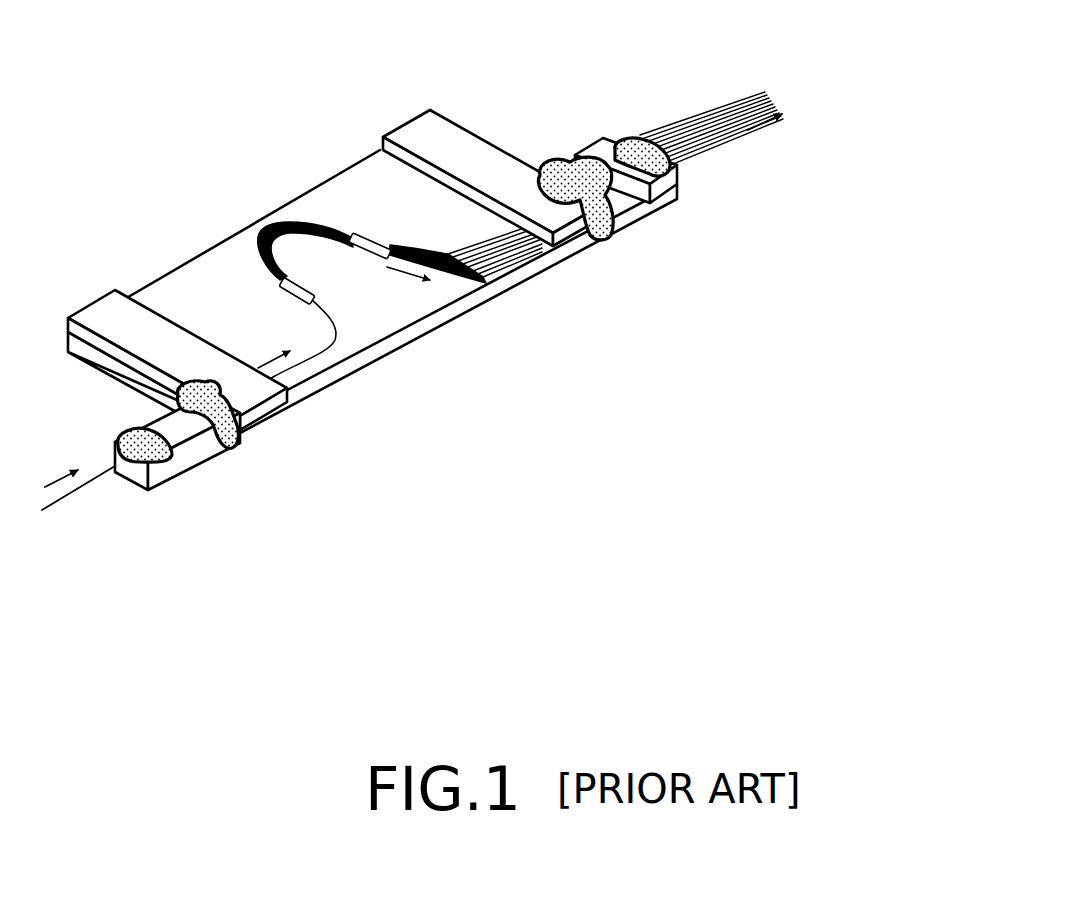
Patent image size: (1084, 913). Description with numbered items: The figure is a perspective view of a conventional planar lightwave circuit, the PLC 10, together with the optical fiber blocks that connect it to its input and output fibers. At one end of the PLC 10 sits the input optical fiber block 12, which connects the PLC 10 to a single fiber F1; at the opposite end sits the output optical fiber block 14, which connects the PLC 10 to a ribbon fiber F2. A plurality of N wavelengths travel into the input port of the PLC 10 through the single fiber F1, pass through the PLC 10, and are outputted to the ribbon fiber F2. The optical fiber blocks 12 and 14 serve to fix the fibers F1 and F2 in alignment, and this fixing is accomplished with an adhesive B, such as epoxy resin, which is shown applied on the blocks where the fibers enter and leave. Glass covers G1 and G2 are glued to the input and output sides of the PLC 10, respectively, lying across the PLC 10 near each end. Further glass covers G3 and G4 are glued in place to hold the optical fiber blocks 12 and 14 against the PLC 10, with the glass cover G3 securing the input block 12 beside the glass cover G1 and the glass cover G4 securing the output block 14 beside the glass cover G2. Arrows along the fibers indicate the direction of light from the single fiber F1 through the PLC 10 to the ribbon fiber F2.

The PLC 10 is at (443, 322).
The optical fiber block 12 is at (178, 462).
The optical fiber block 14 is at (643, 197).
The glass cover G1 is at (108, 305).
The glass cover G2 is at (423, 132).
The glass cover G3 is at (195, 418).
The glass cover G4 is at (598, 147).
The adhesive B is at (115, 432).
The single fiber F1 is at (73, 494).
The ribbon fiber F2 is at (703, 104).